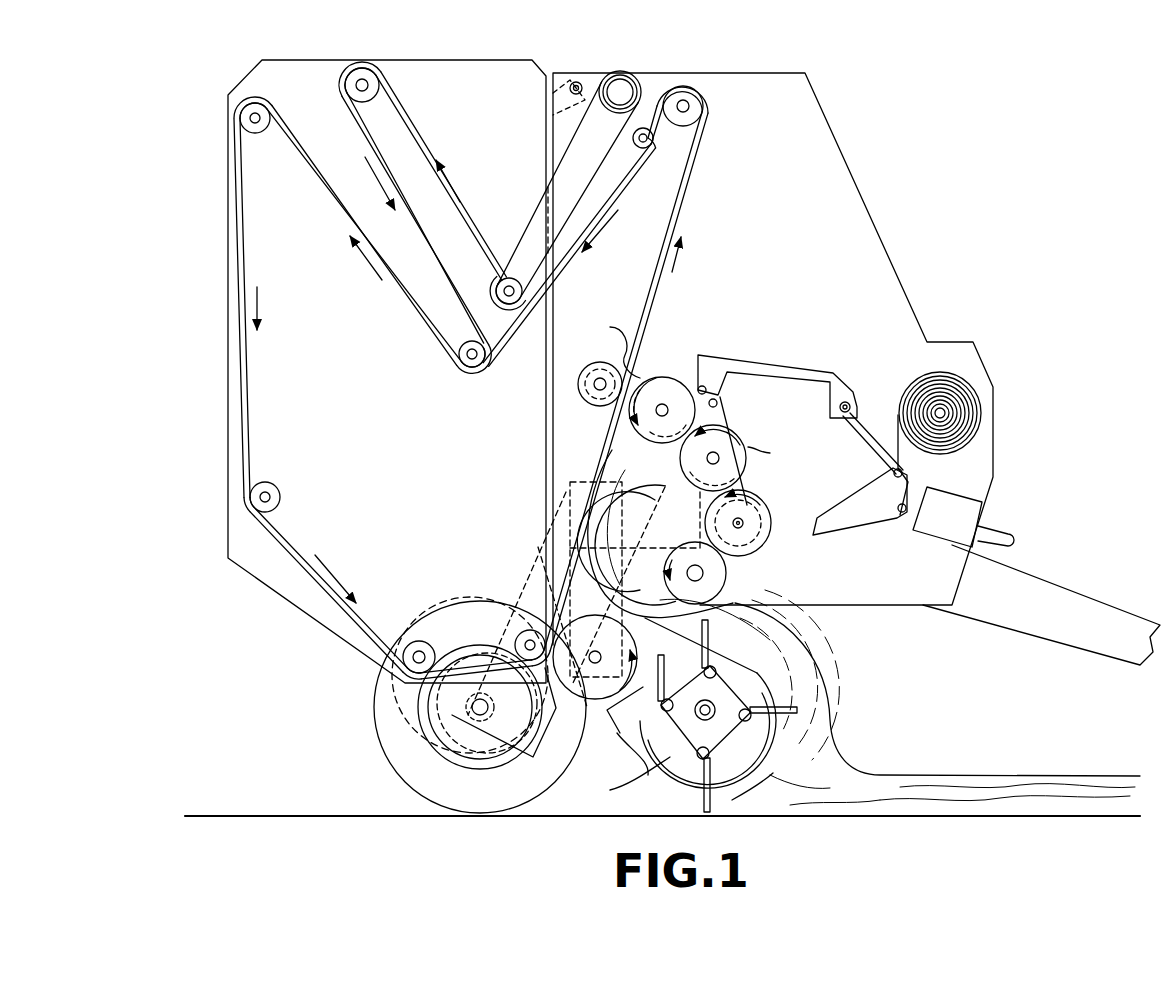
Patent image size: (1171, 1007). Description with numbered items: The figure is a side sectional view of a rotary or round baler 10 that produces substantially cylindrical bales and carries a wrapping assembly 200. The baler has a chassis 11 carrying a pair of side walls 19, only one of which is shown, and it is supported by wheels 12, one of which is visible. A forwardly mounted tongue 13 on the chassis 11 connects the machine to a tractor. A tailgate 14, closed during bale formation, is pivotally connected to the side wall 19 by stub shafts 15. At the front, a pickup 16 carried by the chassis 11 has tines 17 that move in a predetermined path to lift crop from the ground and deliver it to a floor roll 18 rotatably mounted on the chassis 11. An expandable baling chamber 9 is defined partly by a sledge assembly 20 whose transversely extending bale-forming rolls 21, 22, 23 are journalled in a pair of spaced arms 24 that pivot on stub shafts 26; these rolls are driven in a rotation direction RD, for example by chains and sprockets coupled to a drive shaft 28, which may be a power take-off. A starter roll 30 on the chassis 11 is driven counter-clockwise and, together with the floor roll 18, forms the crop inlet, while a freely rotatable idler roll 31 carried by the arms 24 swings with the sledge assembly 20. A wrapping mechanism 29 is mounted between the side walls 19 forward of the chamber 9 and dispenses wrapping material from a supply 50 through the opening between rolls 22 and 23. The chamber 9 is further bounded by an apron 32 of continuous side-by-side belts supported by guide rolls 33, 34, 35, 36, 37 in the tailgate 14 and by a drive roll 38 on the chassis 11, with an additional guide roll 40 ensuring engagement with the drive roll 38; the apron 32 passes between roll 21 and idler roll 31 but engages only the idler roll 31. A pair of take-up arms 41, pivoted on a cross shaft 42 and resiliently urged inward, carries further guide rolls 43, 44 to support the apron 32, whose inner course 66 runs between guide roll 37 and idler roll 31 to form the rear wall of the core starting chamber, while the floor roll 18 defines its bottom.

The round baler 10 is at (918, 116).
The baling chamber 9 is at (413, 506).
The side wall 19 is at (798, 226).
The chassis 11 is at (553, 492).
The tailgate 14 is at (475, 80).
The guide roll 34 is at (246, 125).
The guide roll 33 is at (360, 68).
The guide roll 44 is at (506, 278).
The guide roll 43 is at (466, 366).
The apron 32 is at (266, 407).
The guide roll 35 is at (281, 494).
The guide roll 36 is at (416, 641).
The guide roll 37 is at (521, 632).
The drive roll 38 is at (705, 110).
The guide roll 40 is at (655, 142).
The stub shaft 15 is at (578, 80).
The cross shaft 42 is at (625, 72).
The take-up arm 41 is at (586, 142).
The wrapping assembly 200 is at (655, 362).
The idler roll 31 is at (579, 392).
The rotation direction RD is at (689, 391).
The bale-forming roll 21 is at (668, 383).
The arm 24 is at (680, 446).
The bale-forming roll 22 is at (748, 472).
The sledge assembly 20 is at (772, 398).
The stub shaft 26 is at (760, 523).
The bale-forming roll 23 is at (758, 548).
The starter roll 30 is at (726, 578).
The wrapping mechanism 29 is at (889, 360).
The supply of wrapping material 50 is at (965, 392).
The drive shaft 28 is at (998, 525).
The tongue 13 is at (1080, 602).
The inner course 66 is at (558, 582).
The floor roll 18 is at (598, 701).
The tines 17 is at (700, 803).
The wheel 12 is at (386, 741).
The pickup 16 is at (848, 700).